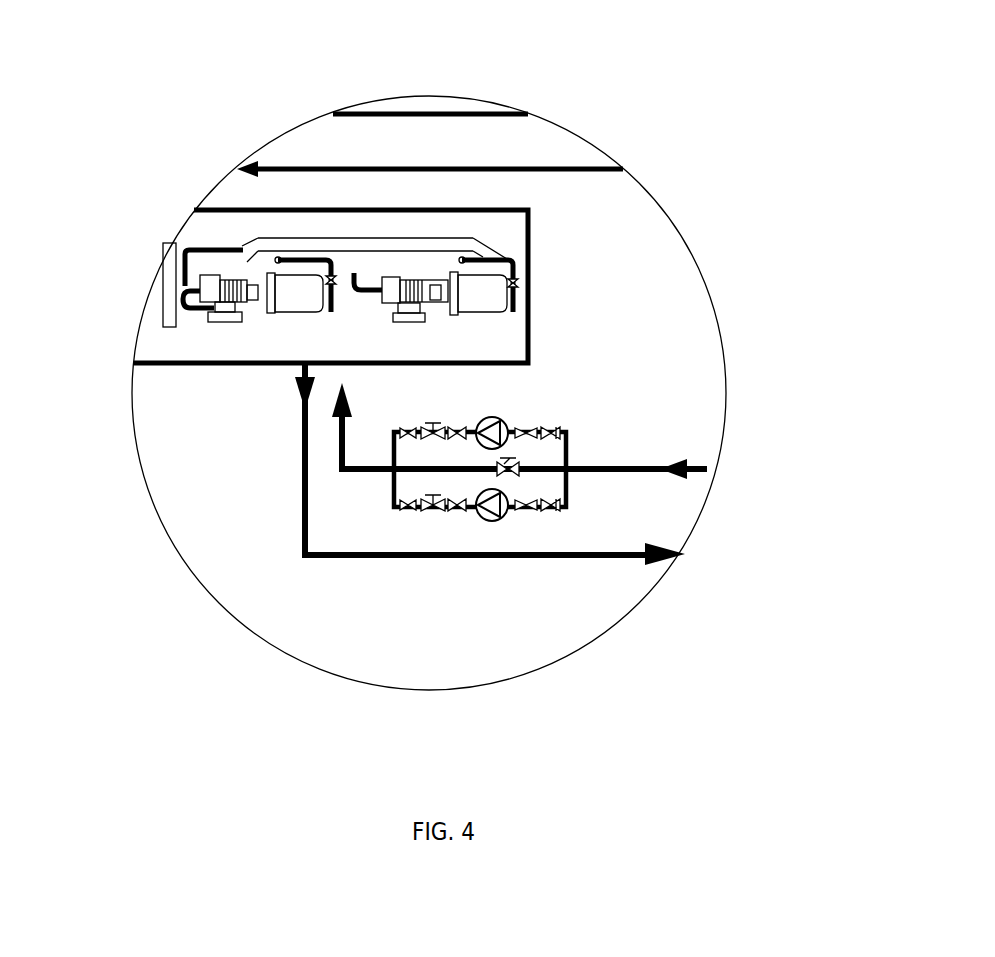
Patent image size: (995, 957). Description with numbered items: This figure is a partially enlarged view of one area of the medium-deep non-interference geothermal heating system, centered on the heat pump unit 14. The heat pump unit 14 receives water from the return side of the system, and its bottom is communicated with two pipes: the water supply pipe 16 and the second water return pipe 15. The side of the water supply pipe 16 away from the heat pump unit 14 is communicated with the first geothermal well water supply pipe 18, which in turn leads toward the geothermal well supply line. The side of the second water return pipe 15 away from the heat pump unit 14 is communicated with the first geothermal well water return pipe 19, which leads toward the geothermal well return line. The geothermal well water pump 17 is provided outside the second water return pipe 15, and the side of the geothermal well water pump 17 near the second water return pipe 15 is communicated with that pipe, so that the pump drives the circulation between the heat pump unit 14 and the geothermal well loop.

The heat pump unit 14 is at (296, 285).
The second water return pipe 15 is at (340, 432).
The water supply pipe 16 is at (300, 477).
The geothermal well water pump 17 is at (488, 516).
The first geothermal well water supply pipe 18 is at (588, 558).
The first geothermal well water return pipe 19 is at (640, 465).